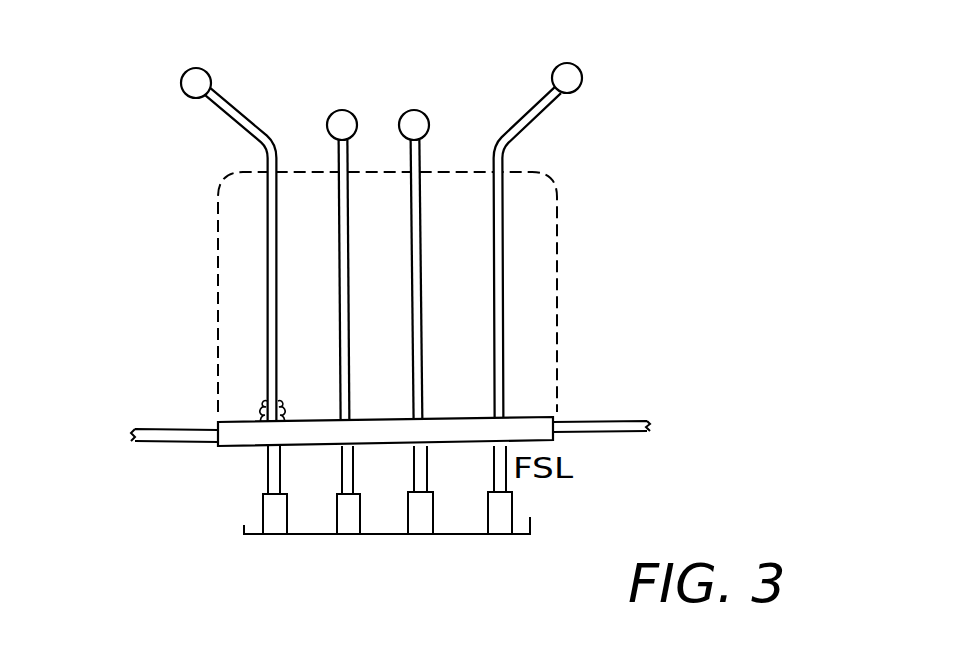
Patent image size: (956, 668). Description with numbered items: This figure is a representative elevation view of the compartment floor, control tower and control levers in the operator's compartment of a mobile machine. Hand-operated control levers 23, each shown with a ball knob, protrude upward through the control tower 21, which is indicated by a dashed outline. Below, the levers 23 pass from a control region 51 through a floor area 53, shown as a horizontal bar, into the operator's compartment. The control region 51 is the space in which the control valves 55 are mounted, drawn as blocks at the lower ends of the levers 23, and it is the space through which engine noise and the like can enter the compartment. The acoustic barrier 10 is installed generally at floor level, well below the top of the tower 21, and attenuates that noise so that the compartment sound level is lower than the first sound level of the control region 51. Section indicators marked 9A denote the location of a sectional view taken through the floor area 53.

The acoustic barrier 10 is at (252, 446).
The control tower 21 is at (553, 177).
The control levers 23 is at (336, 157).
The control region 51 is at (525, 500).
The floor area 53 is at (540, 397).
The control valves 55 is at (343, 528).
The section line 9A is at (557, 281).